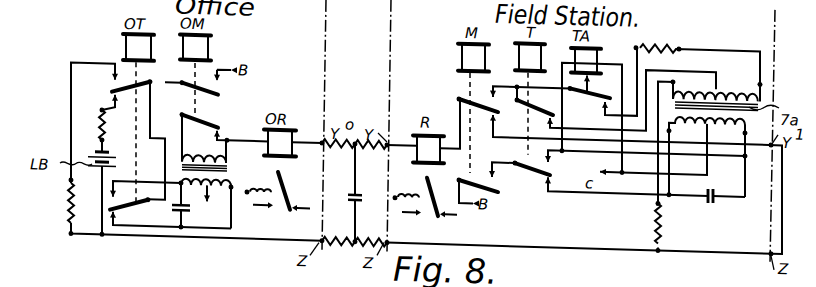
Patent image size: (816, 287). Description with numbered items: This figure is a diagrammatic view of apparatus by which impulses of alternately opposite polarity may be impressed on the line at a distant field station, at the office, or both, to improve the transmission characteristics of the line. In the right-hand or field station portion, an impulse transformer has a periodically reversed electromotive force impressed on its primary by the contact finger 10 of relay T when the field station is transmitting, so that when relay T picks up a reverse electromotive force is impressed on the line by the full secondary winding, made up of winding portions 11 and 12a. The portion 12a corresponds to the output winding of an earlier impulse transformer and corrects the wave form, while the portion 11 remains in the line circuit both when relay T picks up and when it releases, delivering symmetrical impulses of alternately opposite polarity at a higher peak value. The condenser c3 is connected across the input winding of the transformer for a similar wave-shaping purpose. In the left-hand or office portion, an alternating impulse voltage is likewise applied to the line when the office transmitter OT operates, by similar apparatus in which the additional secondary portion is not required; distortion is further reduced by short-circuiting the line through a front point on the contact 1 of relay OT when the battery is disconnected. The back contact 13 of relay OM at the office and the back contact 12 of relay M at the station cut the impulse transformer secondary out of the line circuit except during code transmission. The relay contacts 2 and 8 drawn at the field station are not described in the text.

The contact of relay OT 1 is at (134, 88).
The back contact of relay OM 13 is at (212, 108).
The secondary winding portion 11 is at (206, 150).
The back contact of relay M 12 is at (466, 93).
The field transmitting relay contact 2 is at (526, 101).
The contact finger of relay T 10 is at (520, 159).
The field relay contact 8 is at (468, 179).
The secondary winding portion 12a is at (737, 76).
The condenser c3 is at (713, 194).